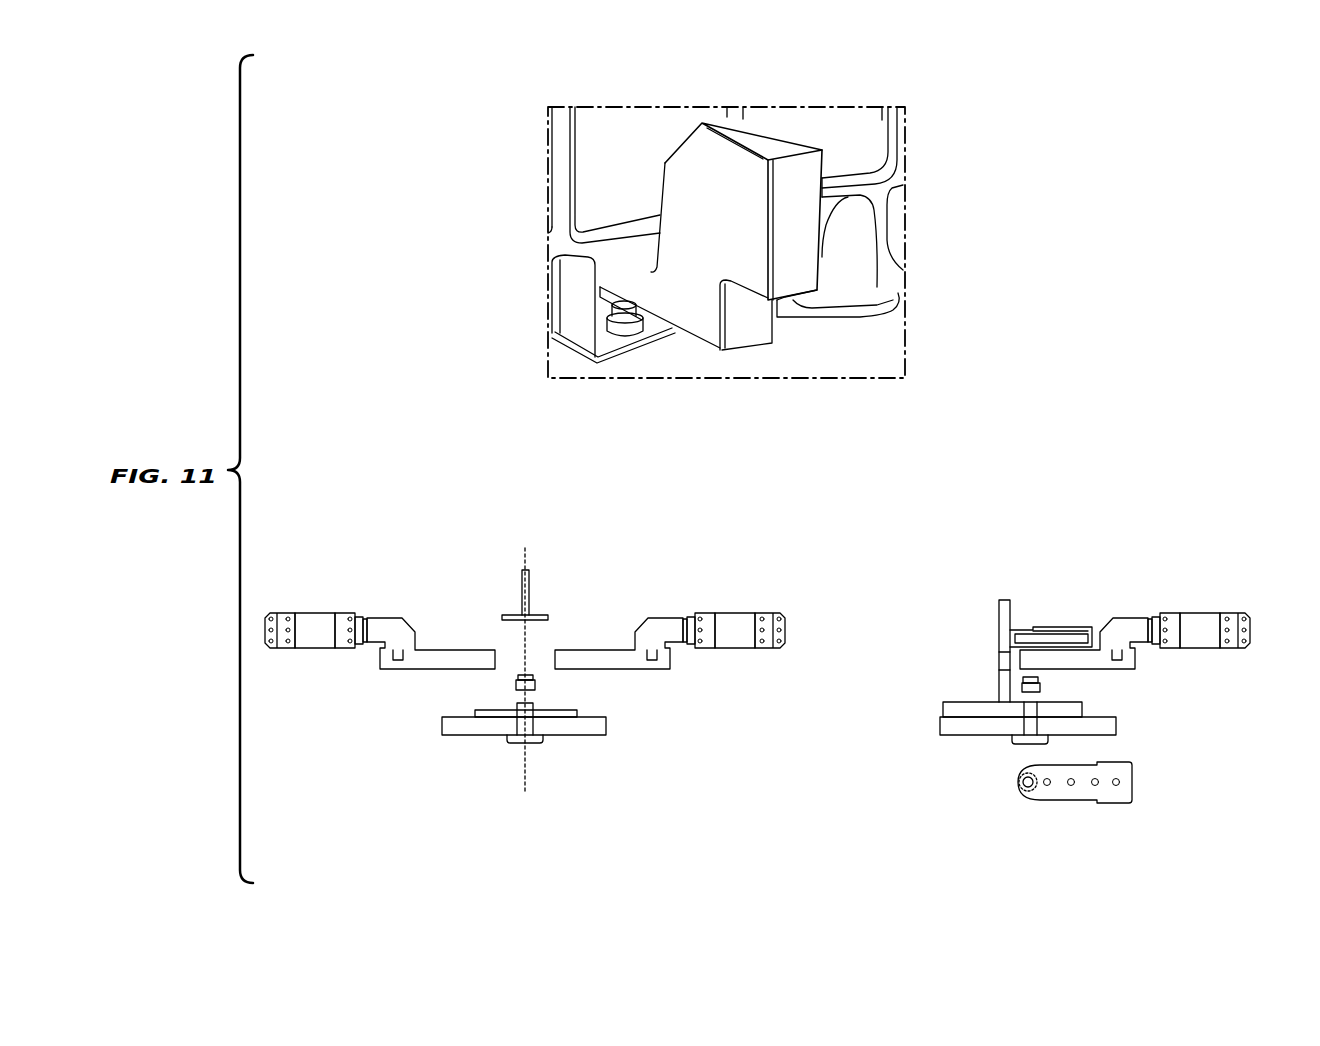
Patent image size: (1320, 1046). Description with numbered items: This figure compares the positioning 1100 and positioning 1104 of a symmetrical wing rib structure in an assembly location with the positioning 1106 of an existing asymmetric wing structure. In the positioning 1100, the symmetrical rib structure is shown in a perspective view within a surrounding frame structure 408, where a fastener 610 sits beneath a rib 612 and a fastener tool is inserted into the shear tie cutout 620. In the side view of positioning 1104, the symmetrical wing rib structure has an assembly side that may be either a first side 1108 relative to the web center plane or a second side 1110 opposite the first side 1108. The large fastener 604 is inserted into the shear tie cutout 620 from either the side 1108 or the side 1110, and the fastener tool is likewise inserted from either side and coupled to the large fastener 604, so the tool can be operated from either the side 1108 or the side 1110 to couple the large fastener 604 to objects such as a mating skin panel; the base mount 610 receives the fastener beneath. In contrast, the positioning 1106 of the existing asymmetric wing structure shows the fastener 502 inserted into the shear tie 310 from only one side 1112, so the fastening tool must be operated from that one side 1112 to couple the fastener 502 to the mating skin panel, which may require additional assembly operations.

The positioning 1100 is at (800, 72).
The frame structure 408 is at (626, 195).
The support rib / T-shaped bracket 612 is at (572, 250).
The shear tie cutout 620 is at (833, 228).
The fastener / base mount 610 is at (650, 338).
The positioning 1104 is at (428, 525).
The first side 1108 is at (508, 606).
The second side 1110 is at (542, 606).
The large fastener 604 is at (535, 678).
The positioning 1106 is at (1170, 560).
The one side 1112 is at (1058, 619).
The shear tie 310 is at (970, 702).
The fastener 502 is at (1040, 678).